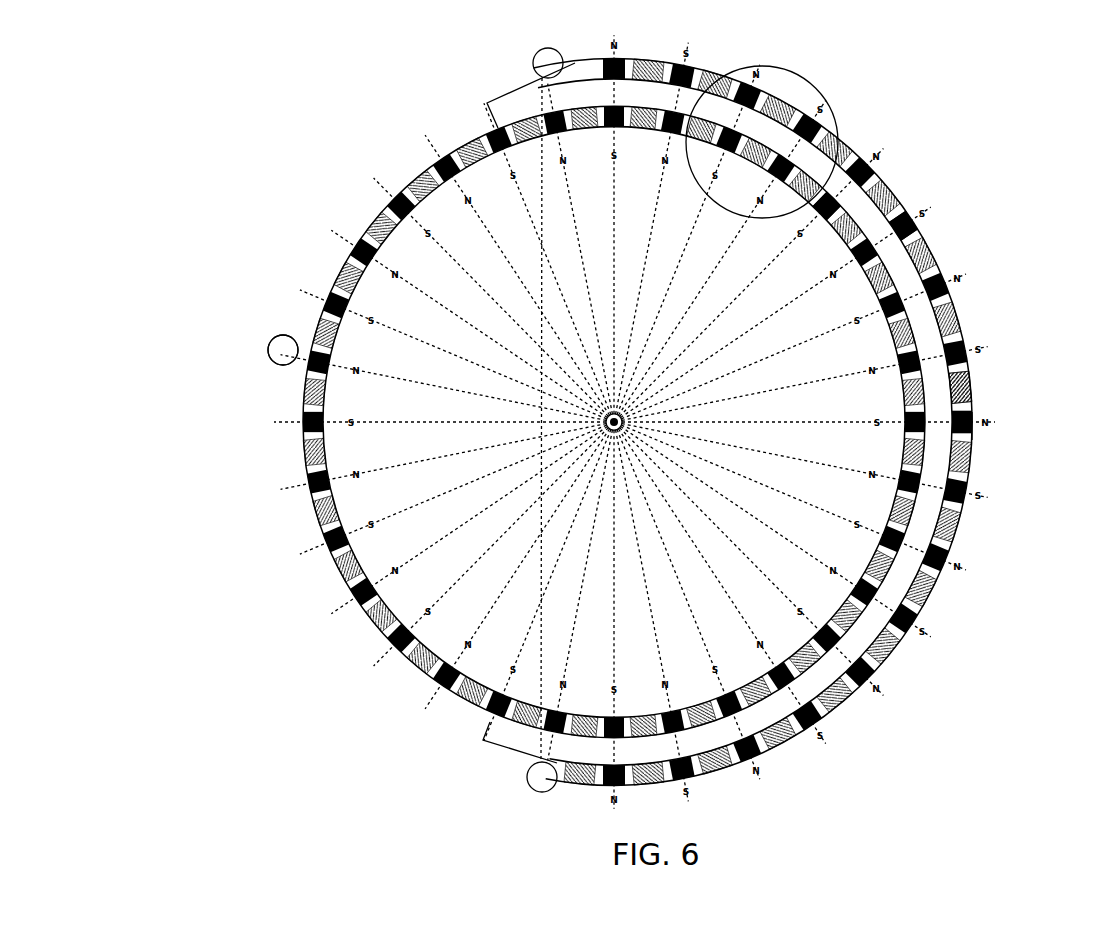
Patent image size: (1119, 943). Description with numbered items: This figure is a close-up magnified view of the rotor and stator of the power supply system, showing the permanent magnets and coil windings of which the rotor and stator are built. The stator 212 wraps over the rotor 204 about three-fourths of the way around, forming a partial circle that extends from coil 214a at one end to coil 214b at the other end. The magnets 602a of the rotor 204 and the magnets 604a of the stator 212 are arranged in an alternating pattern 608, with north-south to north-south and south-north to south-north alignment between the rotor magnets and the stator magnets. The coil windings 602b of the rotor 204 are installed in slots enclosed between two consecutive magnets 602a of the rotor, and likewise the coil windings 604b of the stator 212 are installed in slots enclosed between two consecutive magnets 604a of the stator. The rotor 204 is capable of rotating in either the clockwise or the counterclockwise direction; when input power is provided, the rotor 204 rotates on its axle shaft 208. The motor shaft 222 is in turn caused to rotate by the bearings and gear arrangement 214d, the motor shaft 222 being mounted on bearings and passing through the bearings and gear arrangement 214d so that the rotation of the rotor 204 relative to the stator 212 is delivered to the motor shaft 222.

The rotor 204 is at (317, 514).
The axle shaft 208 is at (614, 422).
The stator 212 is at (957, 548).
The coil 214a is at (535, 62).
The coil 214b is at (528, 778).
The bearings and gear arrangement 214d is at (282, 336).
The motor shaft 222 is at (269, 356).
The magnets 602a is at (830, 205).
The coil windings 602b is at (905, 225).
The magnets 604a is at (973, 432).
The coil windings 604b is at (960, 383).
The alternating pattern 608 is at (722, 70).